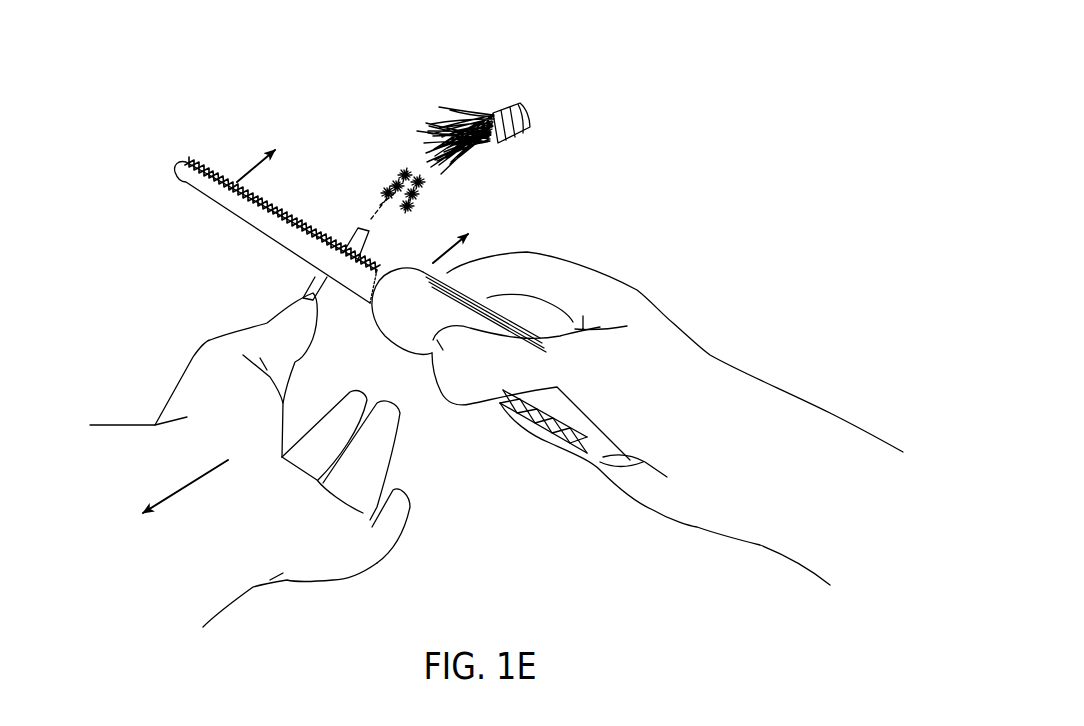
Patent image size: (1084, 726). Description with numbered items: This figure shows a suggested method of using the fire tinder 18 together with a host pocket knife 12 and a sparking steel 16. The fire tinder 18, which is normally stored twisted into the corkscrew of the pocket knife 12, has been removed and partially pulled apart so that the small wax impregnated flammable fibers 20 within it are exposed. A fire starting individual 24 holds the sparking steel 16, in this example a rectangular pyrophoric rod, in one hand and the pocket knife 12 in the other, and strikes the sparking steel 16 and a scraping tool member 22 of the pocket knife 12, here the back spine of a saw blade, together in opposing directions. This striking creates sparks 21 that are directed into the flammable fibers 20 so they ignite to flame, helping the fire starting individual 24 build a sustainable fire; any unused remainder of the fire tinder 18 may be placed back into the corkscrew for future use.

The pocket knife 12 is at (485, 418).
The sparking steel 16 is at (315, 280).
The fire tinder 18 is at (488, 103).
The flammable fibers 20 is at (484, 158).
The sparks 21 is at (389, 190).
The scraping tool member 22 is at (217, 205).
The fire starting individual 24 is at (737, 348).